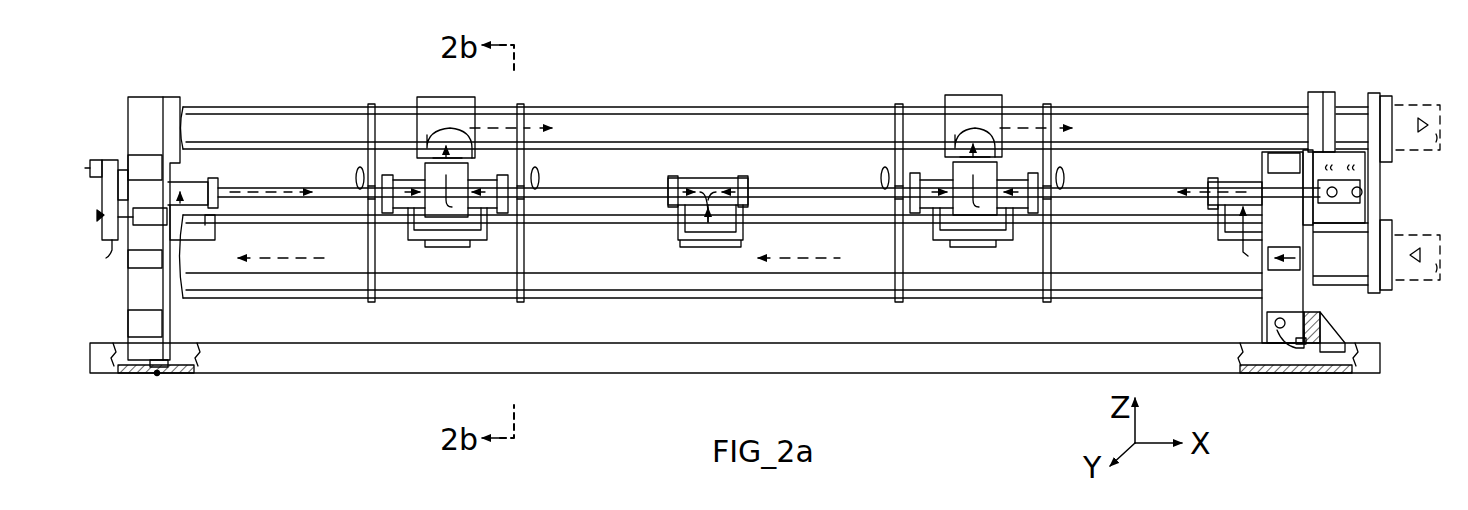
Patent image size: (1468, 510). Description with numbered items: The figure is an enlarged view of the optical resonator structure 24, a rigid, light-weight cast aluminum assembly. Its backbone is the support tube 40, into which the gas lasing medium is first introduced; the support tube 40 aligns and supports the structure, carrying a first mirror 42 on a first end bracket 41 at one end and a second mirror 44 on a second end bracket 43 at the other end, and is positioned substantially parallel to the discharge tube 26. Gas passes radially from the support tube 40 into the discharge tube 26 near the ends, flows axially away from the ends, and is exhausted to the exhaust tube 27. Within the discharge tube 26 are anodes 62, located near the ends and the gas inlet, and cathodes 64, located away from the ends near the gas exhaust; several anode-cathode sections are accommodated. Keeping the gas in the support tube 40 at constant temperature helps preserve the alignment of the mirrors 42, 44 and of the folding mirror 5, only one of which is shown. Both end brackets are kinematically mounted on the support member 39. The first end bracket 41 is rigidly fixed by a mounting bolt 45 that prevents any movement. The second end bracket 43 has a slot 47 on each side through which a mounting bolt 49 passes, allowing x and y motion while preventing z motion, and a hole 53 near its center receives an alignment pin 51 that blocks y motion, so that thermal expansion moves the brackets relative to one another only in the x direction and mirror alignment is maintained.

The optical resonator structure 24 is at (165, 46).
The discharge tube 26 is at (585, 198).
The exhaust tube 27 is at (603, 112).
The support member 39 is at (605, 374).
The support tube 40 is at (590, 292).
The first end bracket 41 is at (136, 306).
The first mirror 42 is at (116, 232).
The second end bracket 43 is at (1266, 268).
The second mirror 44 is at (1308, 205).
The mounting bolt 45 is at (158, 375).
The slot 47 is at (1268, 316).
The mounting bolt 49 is at (1280, 328).
The alignment pin 51 is at (1322, 346).
The hole 53 is at (1287, 345).
The folding mirror 5 is at (1352, 184).
The anode 62 is at (213, 182).
The cathode 64 is at (356, 176).